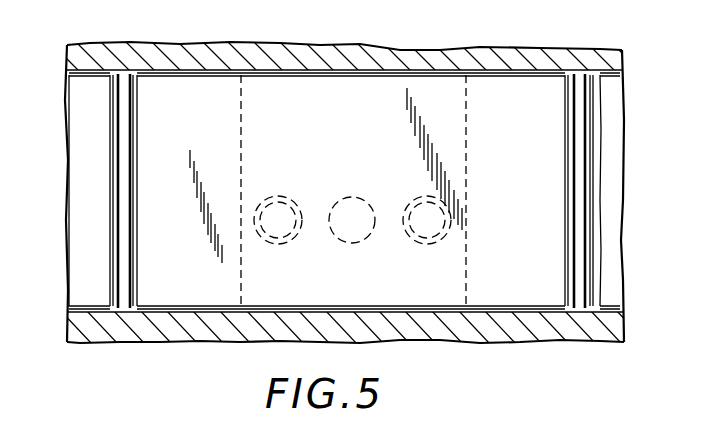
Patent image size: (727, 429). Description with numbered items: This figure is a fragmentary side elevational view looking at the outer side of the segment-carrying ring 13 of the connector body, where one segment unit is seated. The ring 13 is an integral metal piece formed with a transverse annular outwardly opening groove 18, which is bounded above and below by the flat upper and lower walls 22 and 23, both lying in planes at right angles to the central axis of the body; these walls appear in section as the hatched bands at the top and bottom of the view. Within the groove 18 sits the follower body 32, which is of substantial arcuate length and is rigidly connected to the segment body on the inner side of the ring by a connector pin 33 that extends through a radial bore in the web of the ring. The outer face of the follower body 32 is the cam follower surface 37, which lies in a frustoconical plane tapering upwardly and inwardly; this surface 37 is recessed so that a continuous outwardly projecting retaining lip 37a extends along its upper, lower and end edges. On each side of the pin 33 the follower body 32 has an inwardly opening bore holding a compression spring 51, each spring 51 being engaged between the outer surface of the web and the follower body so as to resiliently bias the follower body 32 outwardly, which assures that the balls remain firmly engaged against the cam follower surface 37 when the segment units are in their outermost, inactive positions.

The segment-carrying ring 13 is at (276, 43).
The follower body 32 is at (420, 64).
The upper wall of outwardly opening groove 22 is at (614, 78).
The lower wall of outwardly opening groove 23 is at (617, 312).
The outwardly opening groove 18 is at (123, 307).
The retaining lip 37a is at (150, 75).
The cam follower surface 37 is at (352, 121).
The compression spring 51 is at (285, 193).
The connector pin 33 is at (345, 197).